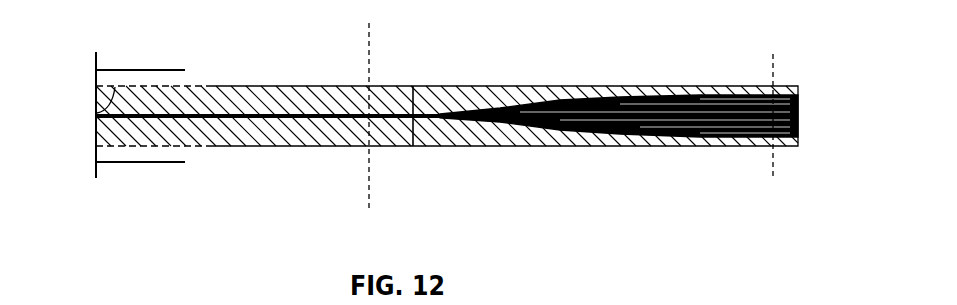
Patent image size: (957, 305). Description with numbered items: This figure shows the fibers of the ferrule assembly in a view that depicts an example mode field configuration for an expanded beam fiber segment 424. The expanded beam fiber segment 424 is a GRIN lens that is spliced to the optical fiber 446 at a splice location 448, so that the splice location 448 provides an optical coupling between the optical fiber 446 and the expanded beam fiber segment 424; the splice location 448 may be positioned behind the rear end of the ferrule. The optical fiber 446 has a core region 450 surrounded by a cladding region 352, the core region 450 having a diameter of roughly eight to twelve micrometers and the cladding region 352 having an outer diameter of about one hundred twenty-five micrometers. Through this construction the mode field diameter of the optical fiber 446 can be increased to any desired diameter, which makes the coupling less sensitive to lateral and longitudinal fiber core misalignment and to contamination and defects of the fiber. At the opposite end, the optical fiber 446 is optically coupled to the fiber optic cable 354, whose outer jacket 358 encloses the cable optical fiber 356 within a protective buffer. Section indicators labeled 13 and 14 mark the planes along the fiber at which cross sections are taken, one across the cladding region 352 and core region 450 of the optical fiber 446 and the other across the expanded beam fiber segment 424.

The cladding region 352 is at (346, 97).
The fiber optic cable 354 is at (137, 178).
The cable optical fiber 356 is at (88, 113).
The outer jacket 358 is at (135, 70).
The expanded beam fiber segment 424 is at (722, 77).
The optical fiber 446 is at (270, 78).
The splice location 448 is at (418, 78).
The core region 450 is at (302, 128).
The section line 13- 13 is at (815, 177).
The section line 14- 14 is at (409, 208).